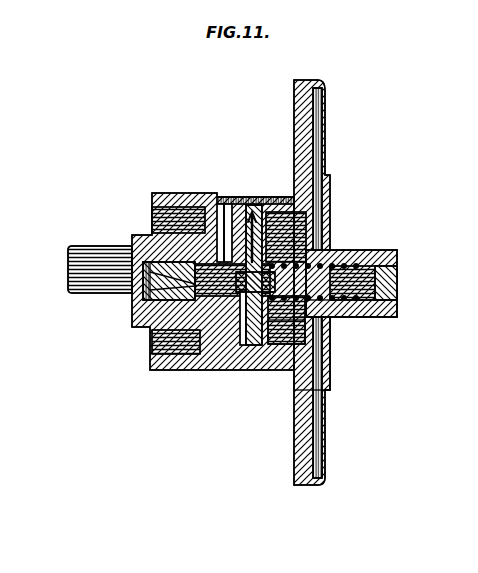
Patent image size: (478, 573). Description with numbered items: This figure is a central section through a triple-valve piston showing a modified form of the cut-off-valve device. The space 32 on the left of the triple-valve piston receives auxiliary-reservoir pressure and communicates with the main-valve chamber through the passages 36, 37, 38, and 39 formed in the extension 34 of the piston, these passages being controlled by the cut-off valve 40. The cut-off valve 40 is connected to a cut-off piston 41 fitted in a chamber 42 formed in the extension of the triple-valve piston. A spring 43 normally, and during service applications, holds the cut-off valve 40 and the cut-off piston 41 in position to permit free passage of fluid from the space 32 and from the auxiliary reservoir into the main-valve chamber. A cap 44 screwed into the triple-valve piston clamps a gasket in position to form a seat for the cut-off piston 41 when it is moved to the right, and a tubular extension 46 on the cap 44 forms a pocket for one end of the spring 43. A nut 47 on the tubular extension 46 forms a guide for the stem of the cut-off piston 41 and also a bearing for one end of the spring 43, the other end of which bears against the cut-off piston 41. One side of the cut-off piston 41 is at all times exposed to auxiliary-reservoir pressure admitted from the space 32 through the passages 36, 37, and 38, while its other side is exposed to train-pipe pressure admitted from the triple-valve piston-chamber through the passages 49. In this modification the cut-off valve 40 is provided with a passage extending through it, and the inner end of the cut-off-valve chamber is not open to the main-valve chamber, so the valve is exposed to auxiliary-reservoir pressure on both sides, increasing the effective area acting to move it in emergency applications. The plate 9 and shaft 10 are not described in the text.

The plate 9 is at (322, 420).
The shaft 10 is at (100, 269).
The space 32 is at (169, 292).
The extension 34 is at (190, 372).
The passage 36 is at (262, 203).
The passage 37 is at (221, 206).
The passage 38 is at (236, 292).
The passage 39 is at (176, 342).
The cut-off valve 40 is at (220, 278).
The cut-off piston 41 is at (286, 332).
The chamber 42 is at (286, 320).
The spring 43 is at (356, 262).
The cap 44 is at (330, 360).
The tubular extension 46 is at (346, 317).
The nut 47 is at (388, 317).
The passages 49 is at (332, 252).